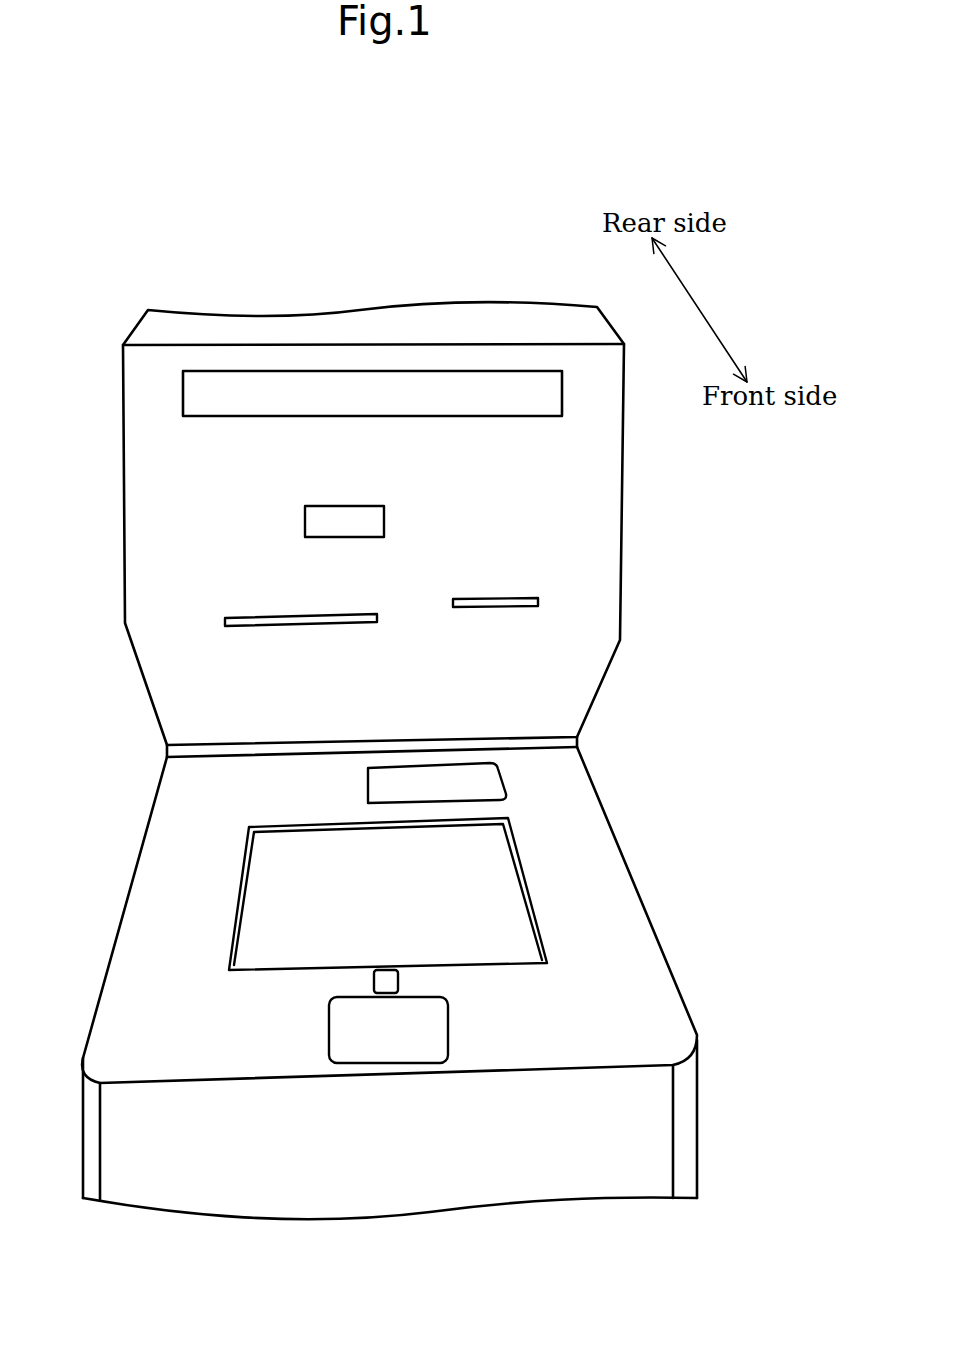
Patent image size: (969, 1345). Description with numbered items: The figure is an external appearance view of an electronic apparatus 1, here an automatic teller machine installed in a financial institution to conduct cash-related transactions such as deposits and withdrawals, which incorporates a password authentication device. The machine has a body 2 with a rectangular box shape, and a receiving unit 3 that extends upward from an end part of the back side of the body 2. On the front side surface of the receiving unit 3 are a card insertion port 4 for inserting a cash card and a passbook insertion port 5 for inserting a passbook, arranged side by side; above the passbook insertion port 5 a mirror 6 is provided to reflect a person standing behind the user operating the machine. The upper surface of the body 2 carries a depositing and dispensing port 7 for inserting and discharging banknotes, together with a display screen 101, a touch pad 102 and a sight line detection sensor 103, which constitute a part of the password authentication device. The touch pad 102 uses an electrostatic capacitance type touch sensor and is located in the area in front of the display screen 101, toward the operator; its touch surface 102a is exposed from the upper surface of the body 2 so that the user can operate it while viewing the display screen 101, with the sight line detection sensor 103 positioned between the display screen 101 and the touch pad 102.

The electronic apparatus 1 is at (135, 248).
The body 2 is at (165, 913).
The receiving unit 3 is at (165, 490).
The card insertion port 4 is at (490, 607).
The passbook insertion port 5 is at (278, 622).
The mirror 6 is at (347, 522).
The depositing and dispensing port 7 is at (485, 790).
The display screen 101 is at (440, 910).
The touch pad 102 is at (448, 1035).
The touch surface 102a is at (397, 1050).
The sight line detection sensor 103 is at (398, 982).